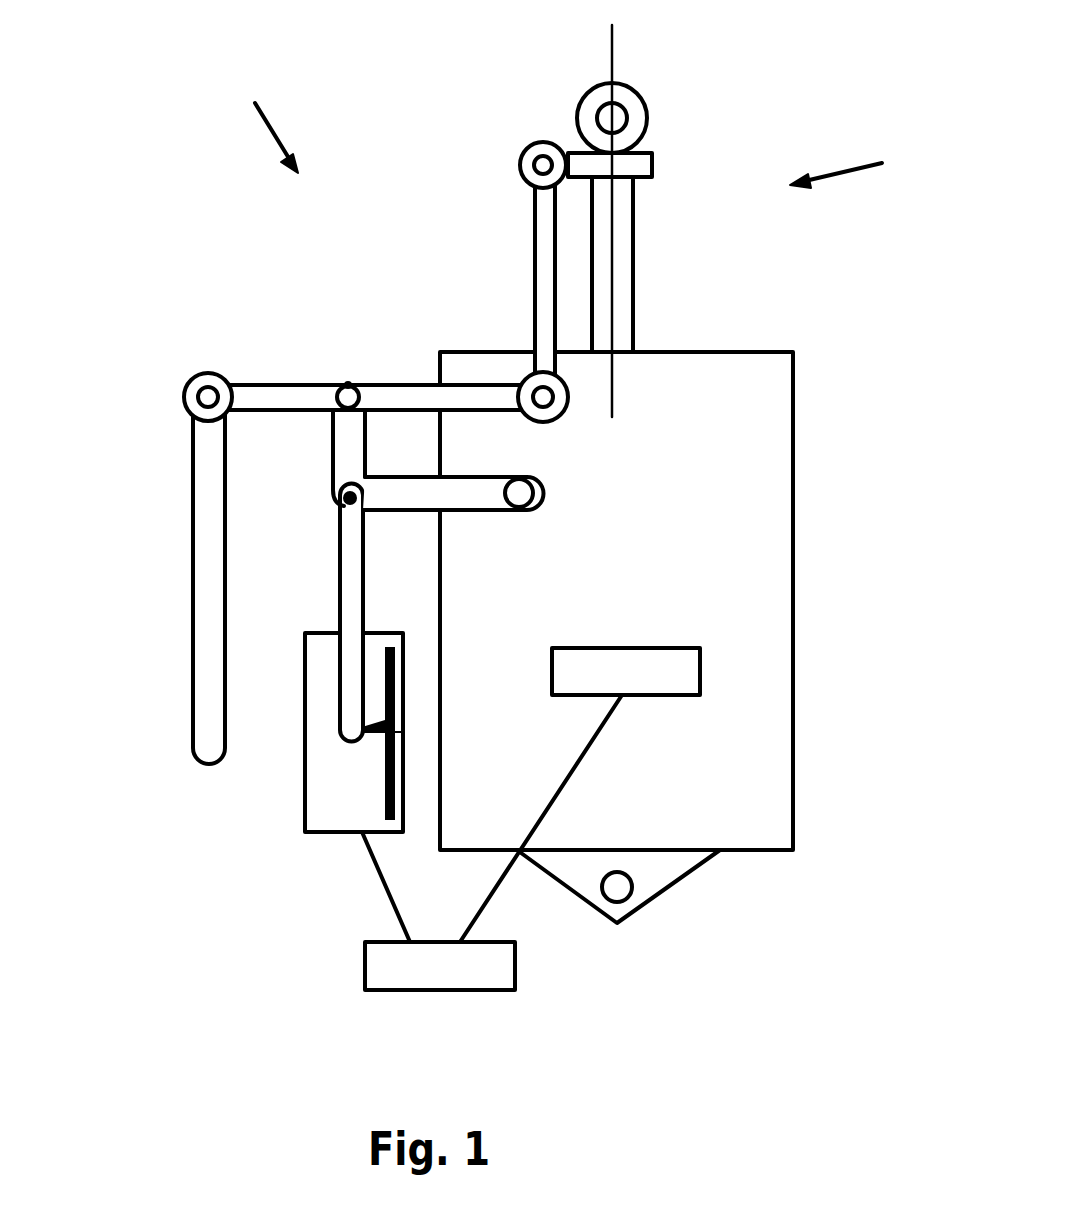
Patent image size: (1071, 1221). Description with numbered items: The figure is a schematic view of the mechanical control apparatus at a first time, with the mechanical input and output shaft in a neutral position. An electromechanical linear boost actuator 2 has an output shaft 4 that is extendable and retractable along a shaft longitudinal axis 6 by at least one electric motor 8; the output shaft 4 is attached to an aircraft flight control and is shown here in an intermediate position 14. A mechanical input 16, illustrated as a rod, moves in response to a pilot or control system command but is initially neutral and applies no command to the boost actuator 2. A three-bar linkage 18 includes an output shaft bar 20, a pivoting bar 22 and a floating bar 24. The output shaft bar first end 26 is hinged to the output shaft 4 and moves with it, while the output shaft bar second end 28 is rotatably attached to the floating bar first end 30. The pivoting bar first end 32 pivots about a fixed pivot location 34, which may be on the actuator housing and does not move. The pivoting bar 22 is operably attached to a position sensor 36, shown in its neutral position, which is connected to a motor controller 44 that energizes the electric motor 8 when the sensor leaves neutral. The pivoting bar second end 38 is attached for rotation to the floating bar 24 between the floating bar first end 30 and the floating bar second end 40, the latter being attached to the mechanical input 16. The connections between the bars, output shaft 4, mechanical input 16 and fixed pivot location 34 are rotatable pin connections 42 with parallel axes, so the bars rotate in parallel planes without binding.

The electromechanical linear boost actuator 2 is at (793, 785).
The output shaft 4 is at (637, 313).
The shaft longitudinal axis 6 is at (612, 58).
The electric motor 8 is at (660, 670).
The intermediate position 14 is at (858, 169).
The mechanical input 16 is at (212, 528).
The three-bar linkage 18 is at (264, 121).
The output shaft bar 20 is at (542, 263).
The pivoting bar 22 is at (347, 465).
The floating bar 24 is at (280, 387).
The output shaft bar first end 26 is at (532, 143).
The output shaft bar second end 28 is at (562, 423).
The floating bar first end 30 is at (513, 380).
The pivoting bar first end 32 is at (503, 512).
The fixed pivot location 34 is at (547, 492).
The position sensor 36 is at (302, 773).
The pivoting bar second end 38 is at (368, 422).
The floating bar second end 40 is at (233, 383).
The rotatable pin connections 42 is at (547, 163).
The motor controller 44 is at (390, 963).